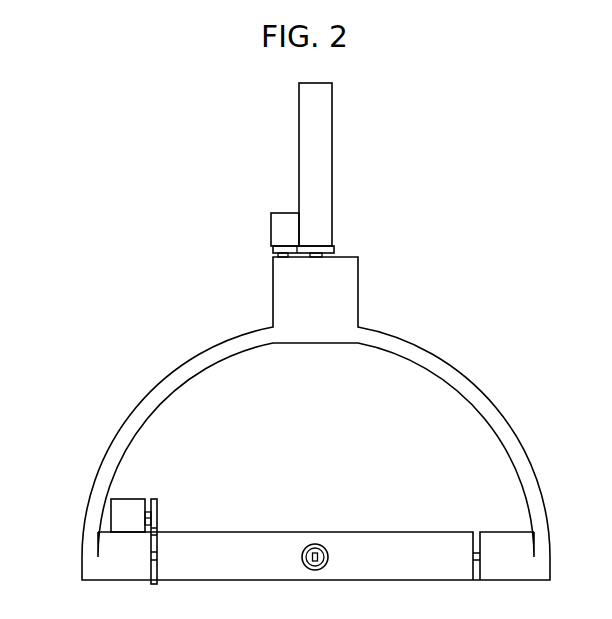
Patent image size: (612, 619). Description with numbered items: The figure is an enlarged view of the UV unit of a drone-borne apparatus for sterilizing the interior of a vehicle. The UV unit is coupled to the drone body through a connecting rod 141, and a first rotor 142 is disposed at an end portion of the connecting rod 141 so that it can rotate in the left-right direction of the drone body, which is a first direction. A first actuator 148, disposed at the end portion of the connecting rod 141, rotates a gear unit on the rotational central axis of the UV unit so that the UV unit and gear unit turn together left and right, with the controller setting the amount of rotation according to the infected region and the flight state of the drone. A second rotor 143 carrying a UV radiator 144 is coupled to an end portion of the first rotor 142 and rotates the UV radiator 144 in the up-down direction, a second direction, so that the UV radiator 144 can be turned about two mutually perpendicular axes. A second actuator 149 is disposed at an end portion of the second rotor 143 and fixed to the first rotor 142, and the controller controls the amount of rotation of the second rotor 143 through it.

The connecting rod 141 is at (325, 152).
The first rotor 142 is at (458, 380).
The second rotor 143 is at (424, 545).
The UV radiator 144 is at (303, 558).
The first actuator 148 is at (273, 250).
The second actuator 149 is at (125, 505).